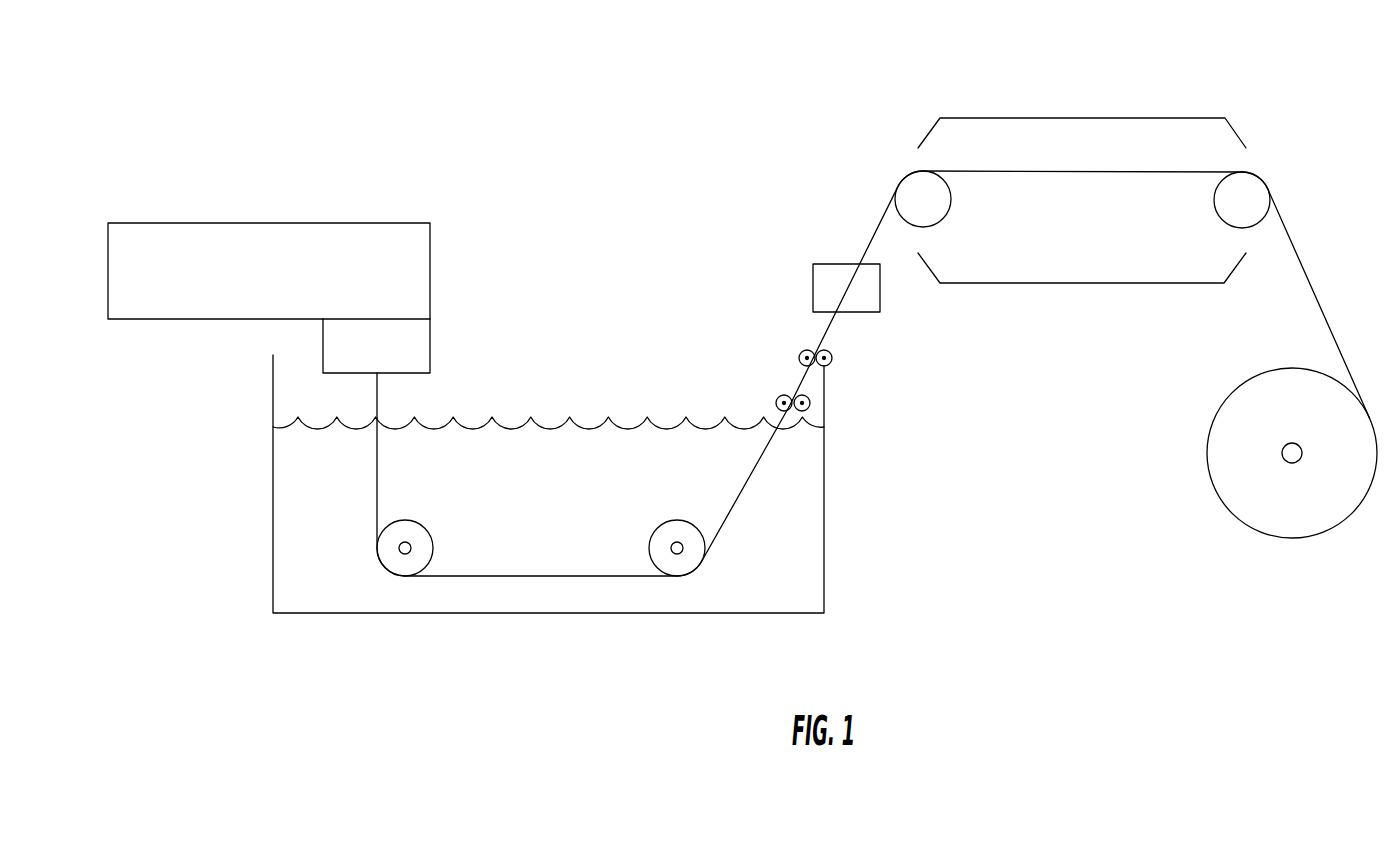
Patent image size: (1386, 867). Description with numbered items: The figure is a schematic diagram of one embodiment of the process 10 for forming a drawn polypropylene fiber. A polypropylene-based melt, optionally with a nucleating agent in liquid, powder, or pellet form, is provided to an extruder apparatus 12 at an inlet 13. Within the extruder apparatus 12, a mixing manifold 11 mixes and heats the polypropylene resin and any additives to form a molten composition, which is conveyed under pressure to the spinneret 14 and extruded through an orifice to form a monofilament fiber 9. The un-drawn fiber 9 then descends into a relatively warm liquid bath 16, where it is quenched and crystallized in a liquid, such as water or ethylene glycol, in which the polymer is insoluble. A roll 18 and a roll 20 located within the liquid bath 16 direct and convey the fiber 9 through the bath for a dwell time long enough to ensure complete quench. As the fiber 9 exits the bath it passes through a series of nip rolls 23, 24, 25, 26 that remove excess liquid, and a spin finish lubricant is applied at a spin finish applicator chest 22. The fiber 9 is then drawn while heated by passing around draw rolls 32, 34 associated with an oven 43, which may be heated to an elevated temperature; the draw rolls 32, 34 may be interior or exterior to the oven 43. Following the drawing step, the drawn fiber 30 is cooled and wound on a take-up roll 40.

The fiber 9 is at (377, 455).
The process 10 is at (196, 100).
The mixing manifold 11 is at (278, 282).
The extruder apparatus 12 is at (296, 264).
The inlet 13 is at (136, 231).
The spinneret 14 is at (418, 342).
The liquid bath 16 is at (288, 458).
The roll 18 is at (405, 567).
The roll 20 is at (693, 557).
The spin finish applicator chest 22 is at (857, 298).
The nip roll 23 is at (776, 400).
The nip roll 24 is at (810, 403).
The nip roll 25 is at (799, 353).
The nip roll 26 is at (832, 356).
The drawn fiber 30 is at (1300, 247).
The draw roll 32 is at (935, 203).
The draw roll 34 is at (1225, 215).
The take-up roll 40 is at (1238, 483).
The oven 43 is at (1066, 132).